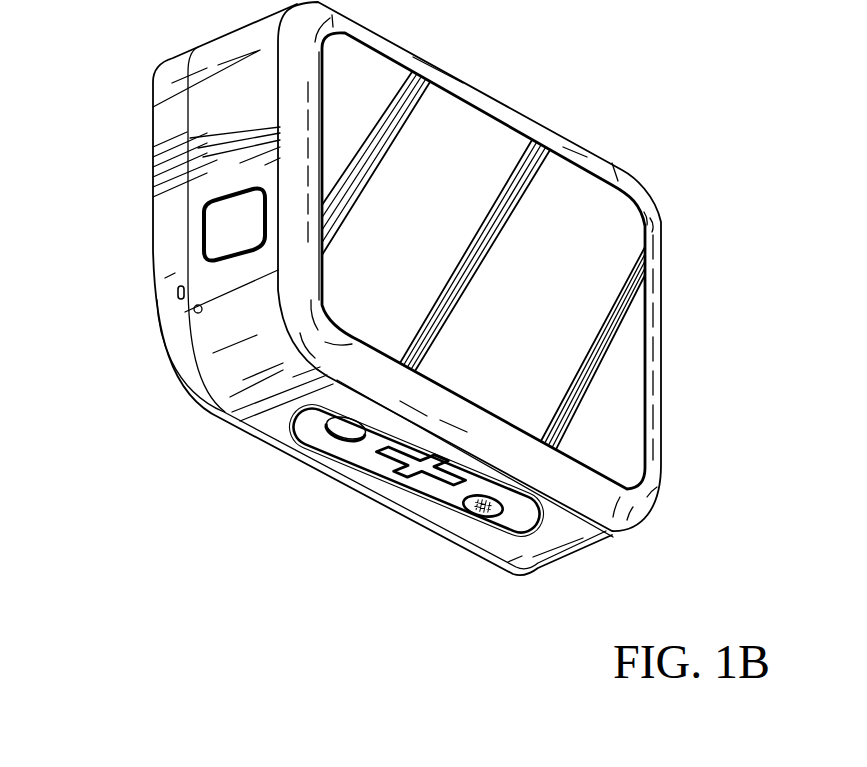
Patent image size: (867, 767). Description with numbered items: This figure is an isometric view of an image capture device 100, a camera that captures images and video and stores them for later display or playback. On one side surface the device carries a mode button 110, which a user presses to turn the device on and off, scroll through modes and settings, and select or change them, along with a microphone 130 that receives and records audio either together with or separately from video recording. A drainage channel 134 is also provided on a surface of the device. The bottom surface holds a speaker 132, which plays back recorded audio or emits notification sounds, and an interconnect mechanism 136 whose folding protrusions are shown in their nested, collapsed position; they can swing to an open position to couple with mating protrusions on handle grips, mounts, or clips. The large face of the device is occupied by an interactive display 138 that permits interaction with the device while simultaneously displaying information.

The image capture device 100 is at (650, 79).
The mode button 110 is at (217, 230).
The microphone 130 is at (193, 310).
The speaker 132 is at (481, 514).
The drainage channel 134 is at (170, 290).
The interconnect mechanism 136 is at (347, 450).
The interactive display 138 is at (620, 380).